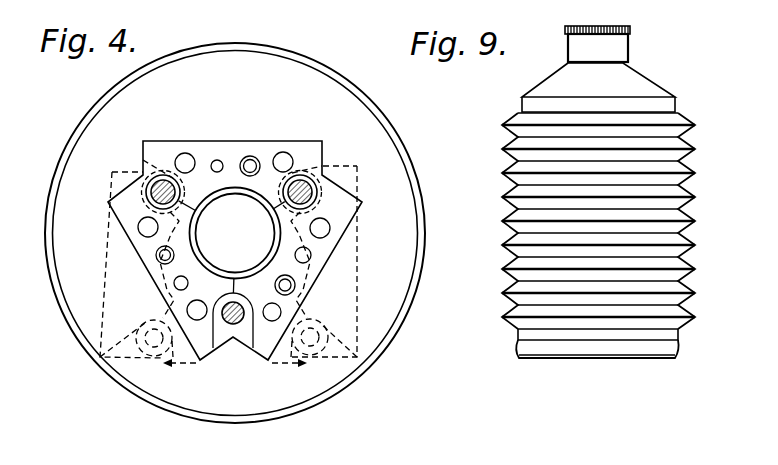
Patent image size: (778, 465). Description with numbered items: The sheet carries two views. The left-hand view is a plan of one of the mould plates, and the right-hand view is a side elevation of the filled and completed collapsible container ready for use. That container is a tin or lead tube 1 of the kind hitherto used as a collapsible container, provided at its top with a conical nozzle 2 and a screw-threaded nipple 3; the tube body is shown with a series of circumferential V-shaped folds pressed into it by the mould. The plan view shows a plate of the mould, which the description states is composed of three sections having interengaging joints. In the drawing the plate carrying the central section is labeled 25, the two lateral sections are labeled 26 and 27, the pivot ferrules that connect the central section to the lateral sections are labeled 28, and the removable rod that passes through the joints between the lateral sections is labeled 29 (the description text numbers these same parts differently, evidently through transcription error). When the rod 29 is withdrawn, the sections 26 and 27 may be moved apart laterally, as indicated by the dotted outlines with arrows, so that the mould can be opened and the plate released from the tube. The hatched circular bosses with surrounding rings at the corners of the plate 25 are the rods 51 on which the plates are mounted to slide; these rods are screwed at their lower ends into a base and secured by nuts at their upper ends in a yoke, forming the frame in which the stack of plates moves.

In FIG. 9, the tube 1 is at (678, 103).
In FIG. 9, the conical nozzle 2 is at (643, 87).
In FIG. 9, the screw-threaded nipple 3 is at (620, 63).
In FIG. 4, the triangular plate 25 is at (230, 141).
In FIG. 4, the left dashed rotated position of plate 26 is at (122, 242).
In FIG. 4, the right dashed rotated position of plate 27 is at (330, 252).
In FIG. 4, the pins 28 is at (163, 182).
In FIG. 4, the pin 29 is at (233, 322).
In FIG. 4, the rods 51 is at (153, 181).